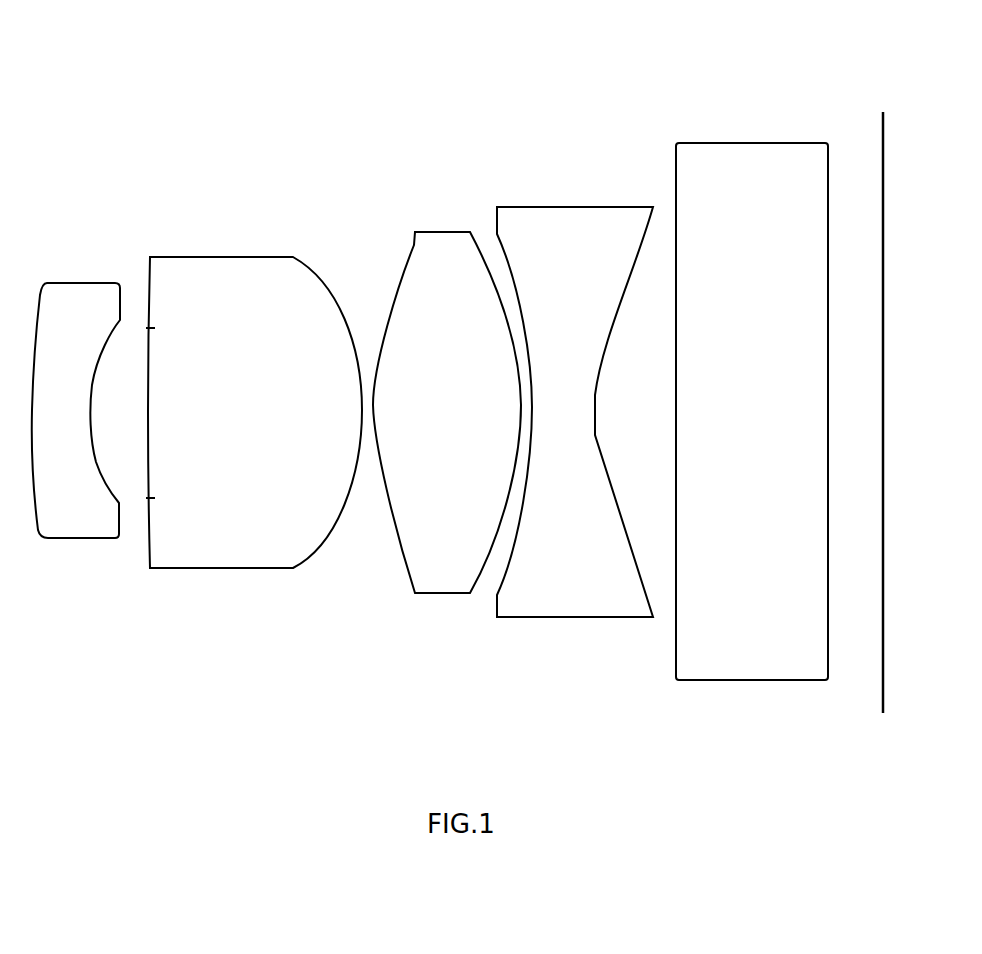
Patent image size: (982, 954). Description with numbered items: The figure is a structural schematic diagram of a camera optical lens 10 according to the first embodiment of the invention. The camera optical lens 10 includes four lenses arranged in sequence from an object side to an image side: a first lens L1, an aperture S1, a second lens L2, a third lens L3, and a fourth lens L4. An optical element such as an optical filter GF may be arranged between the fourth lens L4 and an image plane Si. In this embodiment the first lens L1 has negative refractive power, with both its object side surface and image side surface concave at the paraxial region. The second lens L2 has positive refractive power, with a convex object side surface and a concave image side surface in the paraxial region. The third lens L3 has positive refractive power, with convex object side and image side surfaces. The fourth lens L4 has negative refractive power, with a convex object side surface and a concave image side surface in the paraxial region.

The camera optical lens 10 is at (452, 35).
The first lens L1 is at (76, 400).
The aperture S1 is at (139, 400).
The second lens L2 is at (255, 400).
The third lens L3 is at (447, 400).
The fourth lens L4 is at (575, 400).
The optical filter GF is at (752, 400).
The image plane Si is at (881, 403).